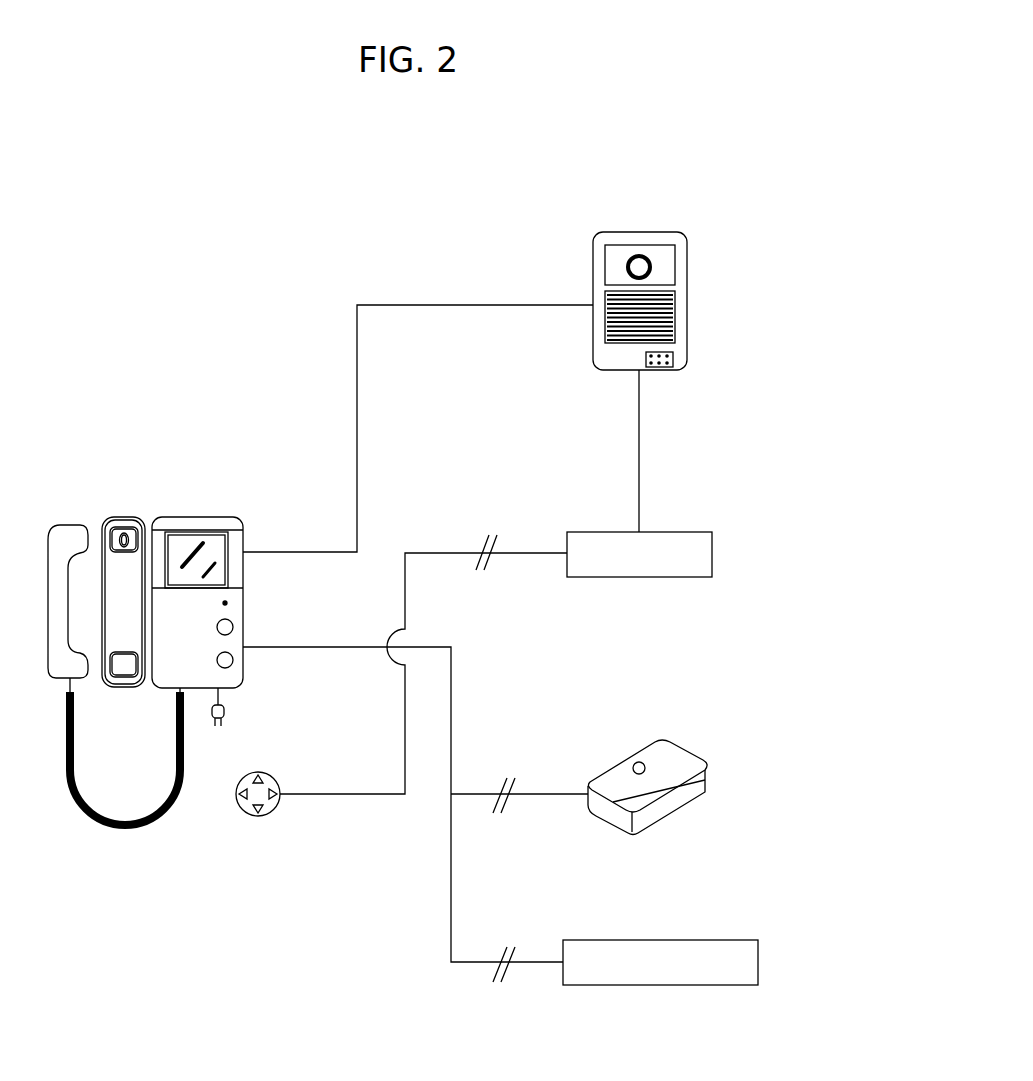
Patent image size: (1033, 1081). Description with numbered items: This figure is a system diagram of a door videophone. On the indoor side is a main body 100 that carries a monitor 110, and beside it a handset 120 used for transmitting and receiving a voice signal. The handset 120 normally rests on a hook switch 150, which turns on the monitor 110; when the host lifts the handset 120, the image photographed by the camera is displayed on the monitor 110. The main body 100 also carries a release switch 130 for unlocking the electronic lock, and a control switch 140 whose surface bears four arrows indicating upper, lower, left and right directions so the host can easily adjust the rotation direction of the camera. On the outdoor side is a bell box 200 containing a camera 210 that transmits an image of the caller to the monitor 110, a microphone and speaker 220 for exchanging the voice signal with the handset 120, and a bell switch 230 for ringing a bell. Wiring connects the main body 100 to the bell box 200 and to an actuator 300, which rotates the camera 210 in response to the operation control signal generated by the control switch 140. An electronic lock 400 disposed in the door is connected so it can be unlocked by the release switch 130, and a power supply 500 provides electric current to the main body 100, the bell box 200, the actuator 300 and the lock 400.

The main body 100 is at (262, 503).
The monitor 110 is at (193, 540).
The handset 120 is at (74, 540).
The release switch 130 is at (230, 664).
The control switch 140 is at (250, 815).
The hook switch 150 is at (124, 535).
The bell box 200 is at (712, 322).
The camera 210 is at (650, 260).
The microphone and speaker 220 is at (668, 308).
The bell switch 230 is at (673, 363).
The actuator 300 is at (683, 532).
The electronic lock 400 is at (735, 775).
The power supply 500 is at (678, 940).